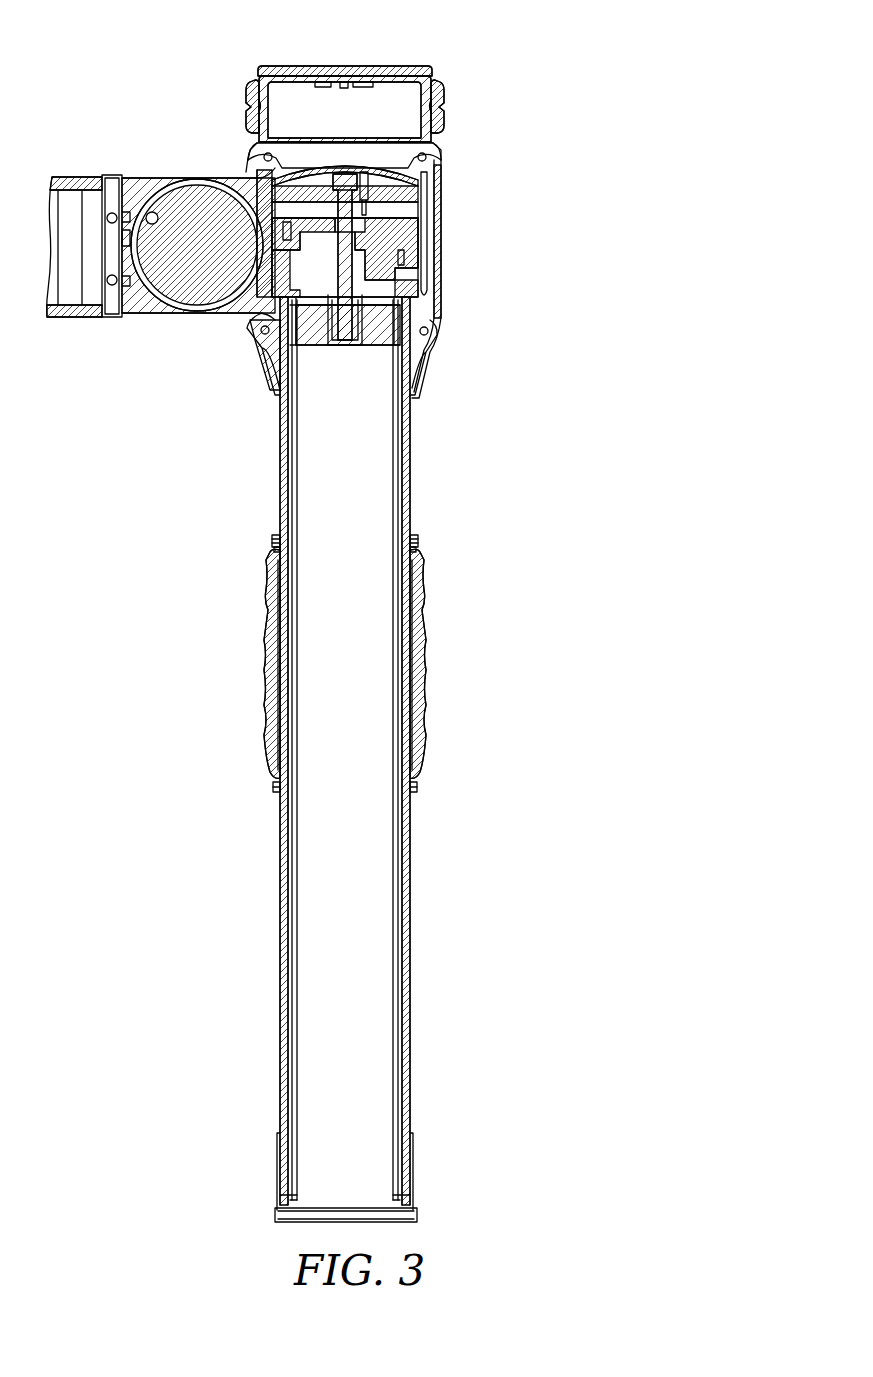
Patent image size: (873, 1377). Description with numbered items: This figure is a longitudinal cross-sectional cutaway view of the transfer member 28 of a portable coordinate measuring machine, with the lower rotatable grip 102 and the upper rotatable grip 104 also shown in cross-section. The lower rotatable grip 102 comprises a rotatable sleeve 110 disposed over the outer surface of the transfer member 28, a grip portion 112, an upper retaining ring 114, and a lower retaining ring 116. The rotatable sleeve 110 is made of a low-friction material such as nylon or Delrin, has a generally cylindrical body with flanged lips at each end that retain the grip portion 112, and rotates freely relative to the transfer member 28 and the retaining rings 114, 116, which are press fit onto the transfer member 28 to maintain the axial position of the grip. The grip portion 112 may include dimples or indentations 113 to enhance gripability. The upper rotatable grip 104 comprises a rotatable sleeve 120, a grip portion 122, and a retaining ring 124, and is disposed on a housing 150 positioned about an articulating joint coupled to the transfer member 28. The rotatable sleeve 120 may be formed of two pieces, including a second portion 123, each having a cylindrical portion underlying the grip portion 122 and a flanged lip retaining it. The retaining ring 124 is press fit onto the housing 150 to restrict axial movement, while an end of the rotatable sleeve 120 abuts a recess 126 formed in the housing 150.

The transfer member 28 is at (410, 880).
The lower rotatable grip 102 is at (406, 759).
The upper rotatable grip 104 is at (358, 86).
The rotatable sleeve 110 is at (416, 547).
The grip portion 112 is at (422, 705).
The dimples or indentations 113 is at (422, 752).
The upper retaining ring 114 is at (416, 536).
The lower retaining ring 116 is at (418, 786).
The rotatable sleeve 120 is at (440, 134).
The grip portion 122 is at (445, 105).
The second portion of rotatable sleeve 123 is at (250, 105).
The retaining ring 124 is at (432, 70).
The recess 126 is at (436, 138).
The housing 150 is at (428, 324).